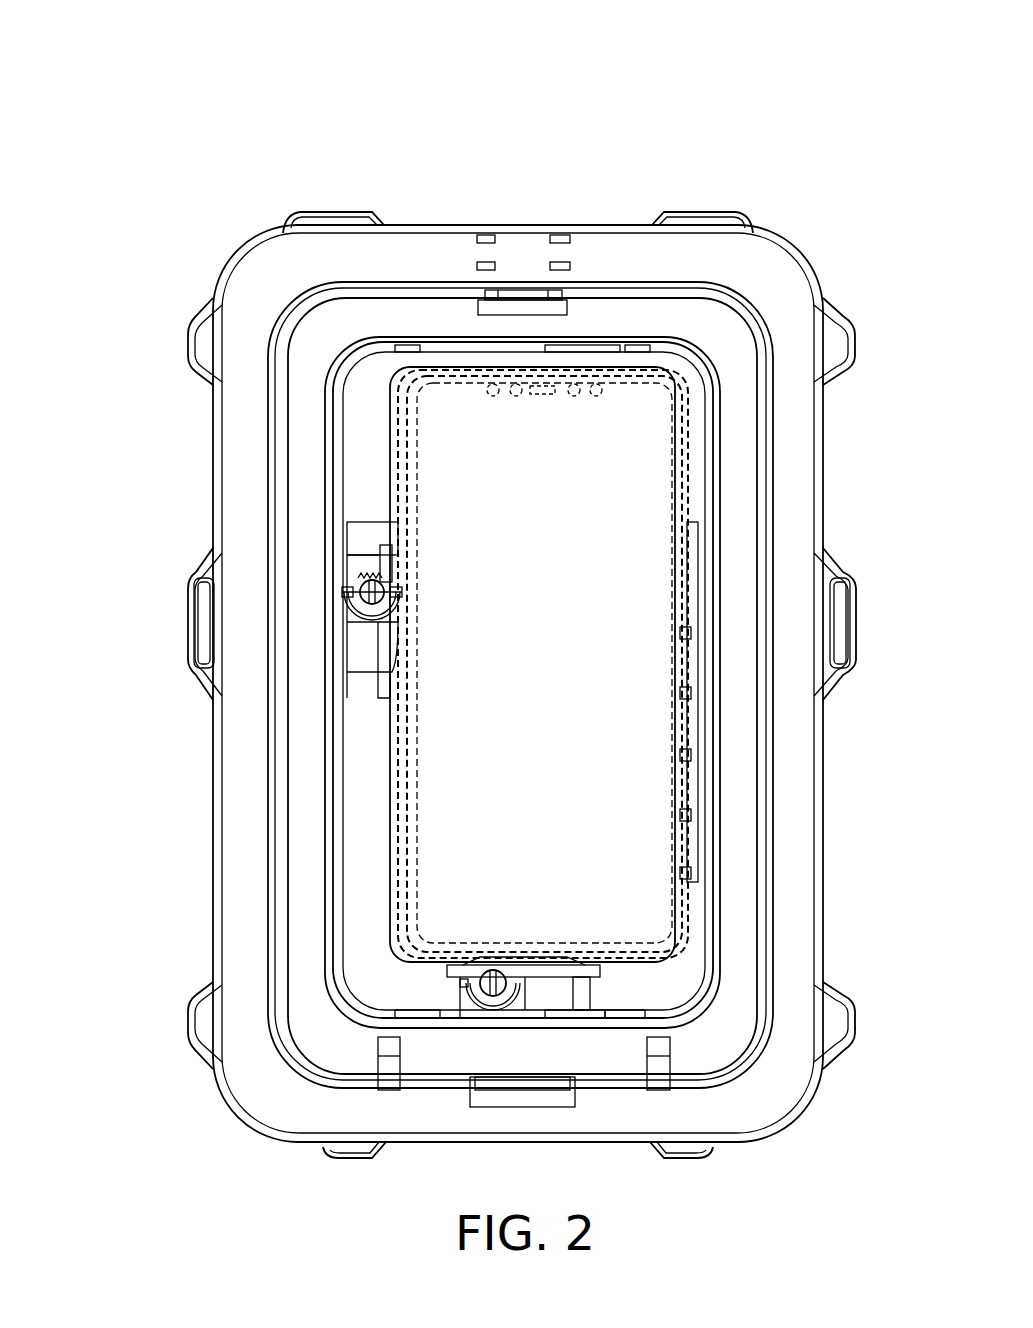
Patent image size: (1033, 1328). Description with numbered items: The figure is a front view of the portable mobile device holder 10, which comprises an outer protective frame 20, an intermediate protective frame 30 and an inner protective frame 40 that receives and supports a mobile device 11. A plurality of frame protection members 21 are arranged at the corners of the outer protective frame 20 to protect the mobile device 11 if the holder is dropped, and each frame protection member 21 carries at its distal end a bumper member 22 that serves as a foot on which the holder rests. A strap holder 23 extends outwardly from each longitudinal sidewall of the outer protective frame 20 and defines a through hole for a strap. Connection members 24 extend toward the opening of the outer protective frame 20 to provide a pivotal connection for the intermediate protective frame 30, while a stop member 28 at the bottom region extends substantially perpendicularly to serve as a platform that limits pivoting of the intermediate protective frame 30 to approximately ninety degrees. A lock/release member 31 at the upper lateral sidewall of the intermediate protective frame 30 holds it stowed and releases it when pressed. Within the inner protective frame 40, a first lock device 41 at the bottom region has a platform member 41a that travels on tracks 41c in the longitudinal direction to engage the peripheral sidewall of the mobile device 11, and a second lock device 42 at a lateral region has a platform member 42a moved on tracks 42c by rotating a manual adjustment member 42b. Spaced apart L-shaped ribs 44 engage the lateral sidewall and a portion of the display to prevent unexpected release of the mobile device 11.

The portable mobile device holder 10 is at (86, 60).
The mobile device 11 is at (630, 545).
The outer protective frame 20 is at (450, 250).
The frame protection member 21 is at (290, 236).
The bumper member 22 is at (208, 338).
The strap holder 23 is at (208, 570).
The connection member 24 is at (390, 1062).
The stop member 28 is at (553, 1083).
The intermediate protective frame 30 is at (318, 512).
The lock/release member 31 is at (530, 295).
The inner protective frame 40 is at (388, 800).
The first lock device 41 is at (482, 1079).
The platform member 41a is at (493, 995).
The tracks 41c is at (593, 990).
The second lock device 42 is at (251, 628).
The platform member 42a is at (390, 633).
The manual adjustment member 42b is at (357, 600).
The tracks 42c is at (362, 683).
The ribs 44 is at (691, 873).